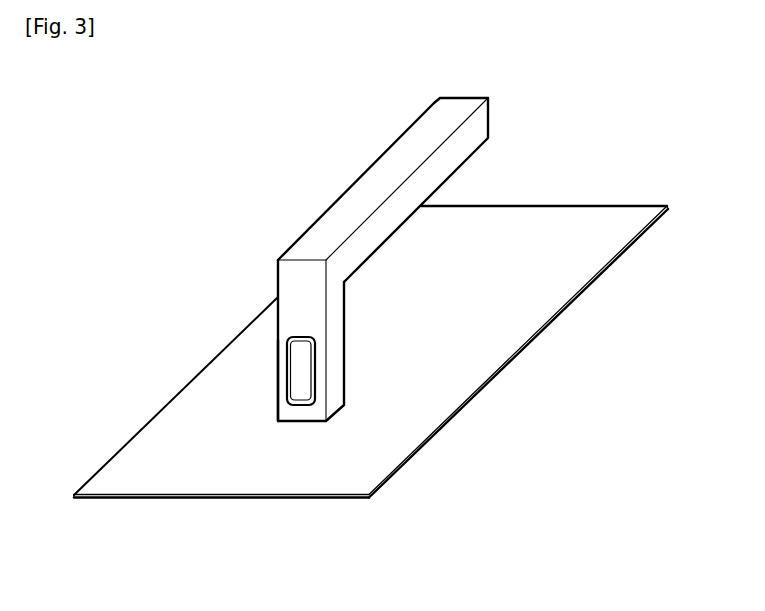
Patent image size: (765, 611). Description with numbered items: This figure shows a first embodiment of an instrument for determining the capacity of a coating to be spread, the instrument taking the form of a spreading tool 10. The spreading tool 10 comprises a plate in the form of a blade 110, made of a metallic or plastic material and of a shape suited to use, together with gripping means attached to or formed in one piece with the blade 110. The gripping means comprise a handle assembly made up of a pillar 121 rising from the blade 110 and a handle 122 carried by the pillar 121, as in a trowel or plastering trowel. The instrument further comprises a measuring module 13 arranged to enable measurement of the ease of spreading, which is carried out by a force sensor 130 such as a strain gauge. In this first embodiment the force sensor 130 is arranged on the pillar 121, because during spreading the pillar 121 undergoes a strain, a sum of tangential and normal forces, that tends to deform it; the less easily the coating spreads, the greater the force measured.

The spreading tool 10 is at (325, 241).
The blade 110 is at (241, 505).
The pillar 121 is at (290, 285).
The handle 122 is at (427, 130).
The measuring module 13 is at (275, 382).
The force sensor 130 is at (323, 368).